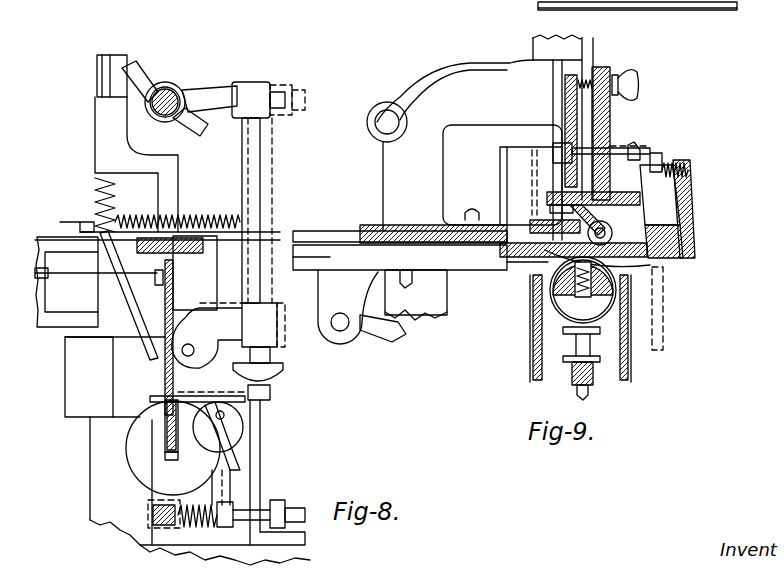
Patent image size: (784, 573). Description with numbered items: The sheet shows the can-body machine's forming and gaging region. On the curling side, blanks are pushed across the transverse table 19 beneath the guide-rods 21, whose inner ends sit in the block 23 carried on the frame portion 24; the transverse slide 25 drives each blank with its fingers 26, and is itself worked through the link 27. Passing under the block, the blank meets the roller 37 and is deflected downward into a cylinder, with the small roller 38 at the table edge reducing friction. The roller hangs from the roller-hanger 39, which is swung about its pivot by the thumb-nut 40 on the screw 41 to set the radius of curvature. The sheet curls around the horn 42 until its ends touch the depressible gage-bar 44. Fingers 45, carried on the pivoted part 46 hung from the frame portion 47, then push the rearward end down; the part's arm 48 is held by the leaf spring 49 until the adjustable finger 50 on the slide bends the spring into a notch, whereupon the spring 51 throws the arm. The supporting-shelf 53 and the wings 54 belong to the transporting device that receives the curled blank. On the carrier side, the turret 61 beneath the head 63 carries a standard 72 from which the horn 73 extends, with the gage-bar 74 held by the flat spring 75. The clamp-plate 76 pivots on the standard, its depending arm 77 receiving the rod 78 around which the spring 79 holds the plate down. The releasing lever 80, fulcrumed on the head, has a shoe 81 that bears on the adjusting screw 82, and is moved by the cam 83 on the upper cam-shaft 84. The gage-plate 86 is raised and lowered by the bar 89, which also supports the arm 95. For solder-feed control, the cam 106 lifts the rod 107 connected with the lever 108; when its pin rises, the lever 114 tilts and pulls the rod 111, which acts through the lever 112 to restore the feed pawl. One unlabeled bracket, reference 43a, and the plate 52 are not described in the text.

In FIG. 9, the transverse table 19 is at (510, 265).
In FIG. 9, the guide-rods 21 is at (345, 232).
In FIG. 9, the block 23 is at (473, 215).
In FIG. 9, the frame portion 24 is at (560, 200).
In FIG. 9, the transverse slide 25 is at (410, 227).
In FIG. 9, the fingers 26 is at (515, 250).
In FIG. 9, the link 27 is at (383, 328).
In FIG. 9, the roller 37 is at (608, 228).
In FIG. 9, the small roller 38 is at (615, 258).
In FIG. 9, the roller-hanger 39 is at (565, 105).
In FIG. 9, the thumb-nut 40 is at (642, 80).
In FIG. 9, the screw 41 is at (598, 70).
In FIG. 9, the horn 42 is at (612, 287).
In FIG. 9, the bracket 43a is at (665, 309).
In FIG. 9, the gage-bar 44 is at (612, 270).
In FIG. 9, the fingers 45 is at (610, 248).
In FIG. 9, the part 46 is at (670, 258).
In FIG. 9, the frame portion 47 is at (690, 225).
In FIG. 9, the arm 48 is at (660, 160).
In FIG. 9, the leaf spring 49 is at (638, 150).
In FIG. 9, the adjustable finger 50 is at (611, 159).
In FIG. 9, the spring 51 is at (682, 166).
In FIG. 9, the plate 52 is at (628, 328).
In FIG. 9, the supporting-shelf 53 is at (568, 335).
In FIG. 9, the wings 54 is at (535, 340).
In FIG. 8, the turret 61 is at (249, 551).
In FIG. 8, the head 63 is at (89, 377).
In FIG. 8, the standard 72 is at (160, 512).
In FIG. 8, the horn 73 is at (165, 430).
In FIG. 8, the gage-bar 74 is at (180, 440).
In FIG. 8, the flat spring 75 is at (172, 458).
In FIG. 8, the clamp-plate 76 is at (195, 400).
In FIG. 8, the depending arm 77 is at (238, 460).
In FIG. 8, the rod 78 is at (255, 510).
In FIG. 8, the spring 79 is at (205, 530).
In FIG. 8, the releasing lever 80 is at (242, 163).
In FIG. 8, the shoe 81 is at (258, 372).
In FIG. 8, the adjusting screw 82 is at (272, 393).
In FIG. 8, the cam 83 is at (190, 126).
In FIG. 8, the upper cam-shaft 84 is at (175, 92).
In FIG. 8, the gage-plate 86 is at (165, 405).
In FIG. 8, the bar 89 is at (177, 273).
In FIG. 8, the arm 95 is at (67, 282).
In FIG. 8, the cam 106 is at (137, 80).
In FIG. 8, the rod 107 is at (150, 340).
In FIG. 8, the lever 108 is at (165, 393).
In FIG. 8, the rod 111 is at (158, 280).
In FIG. 8, the lever 112 is at (68, 274).
In FIG. 8, the lever 114 is at (172, 318).